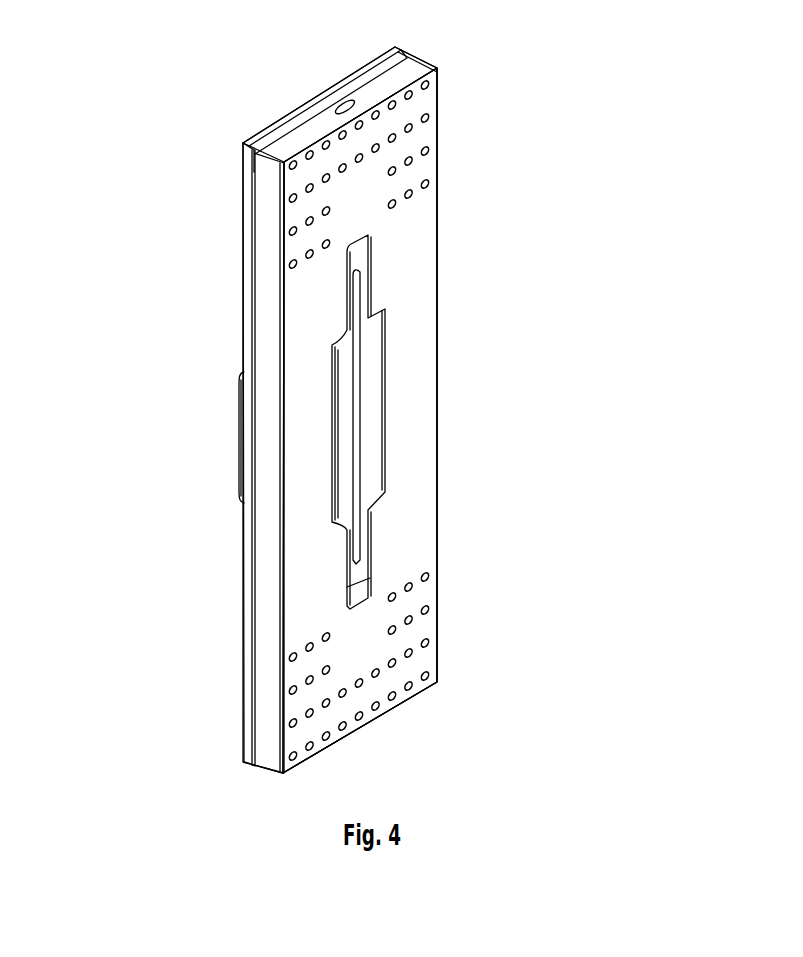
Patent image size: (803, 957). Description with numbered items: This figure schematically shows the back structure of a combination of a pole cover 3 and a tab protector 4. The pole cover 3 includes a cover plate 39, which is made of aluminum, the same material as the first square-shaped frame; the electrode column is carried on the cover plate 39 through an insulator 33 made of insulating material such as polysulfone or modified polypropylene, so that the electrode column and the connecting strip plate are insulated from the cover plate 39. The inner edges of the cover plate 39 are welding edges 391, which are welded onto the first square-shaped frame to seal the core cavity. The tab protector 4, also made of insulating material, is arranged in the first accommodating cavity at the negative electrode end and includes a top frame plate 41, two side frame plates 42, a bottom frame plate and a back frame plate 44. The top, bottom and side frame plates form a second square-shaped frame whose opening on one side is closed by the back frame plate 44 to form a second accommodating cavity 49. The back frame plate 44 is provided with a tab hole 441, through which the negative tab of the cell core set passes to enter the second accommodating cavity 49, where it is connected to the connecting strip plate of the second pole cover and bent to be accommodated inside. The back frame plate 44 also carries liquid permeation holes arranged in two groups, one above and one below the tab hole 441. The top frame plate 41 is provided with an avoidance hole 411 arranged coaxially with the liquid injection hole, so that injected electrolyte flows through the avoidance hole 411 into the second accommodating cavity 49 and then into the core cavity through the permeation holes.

The pole cover 3 is at (233, 440).
The cover plate 39 is at (252, 256).
The welding edge 391 is at (245, 570).
The top frame plate 41 is at (297, 142).
The avoidance hole 411 is at (345, 101).
The tab protector 4 is at (522, 532).
The back frame plate 44 is at (422, 533).
The side frame plate 42 is at (437, 88).
The second accommodating cavity 49 is at (362, 257).
The tab hole 441 is at (378, 417).
The insulator 33 is at (345, 355).